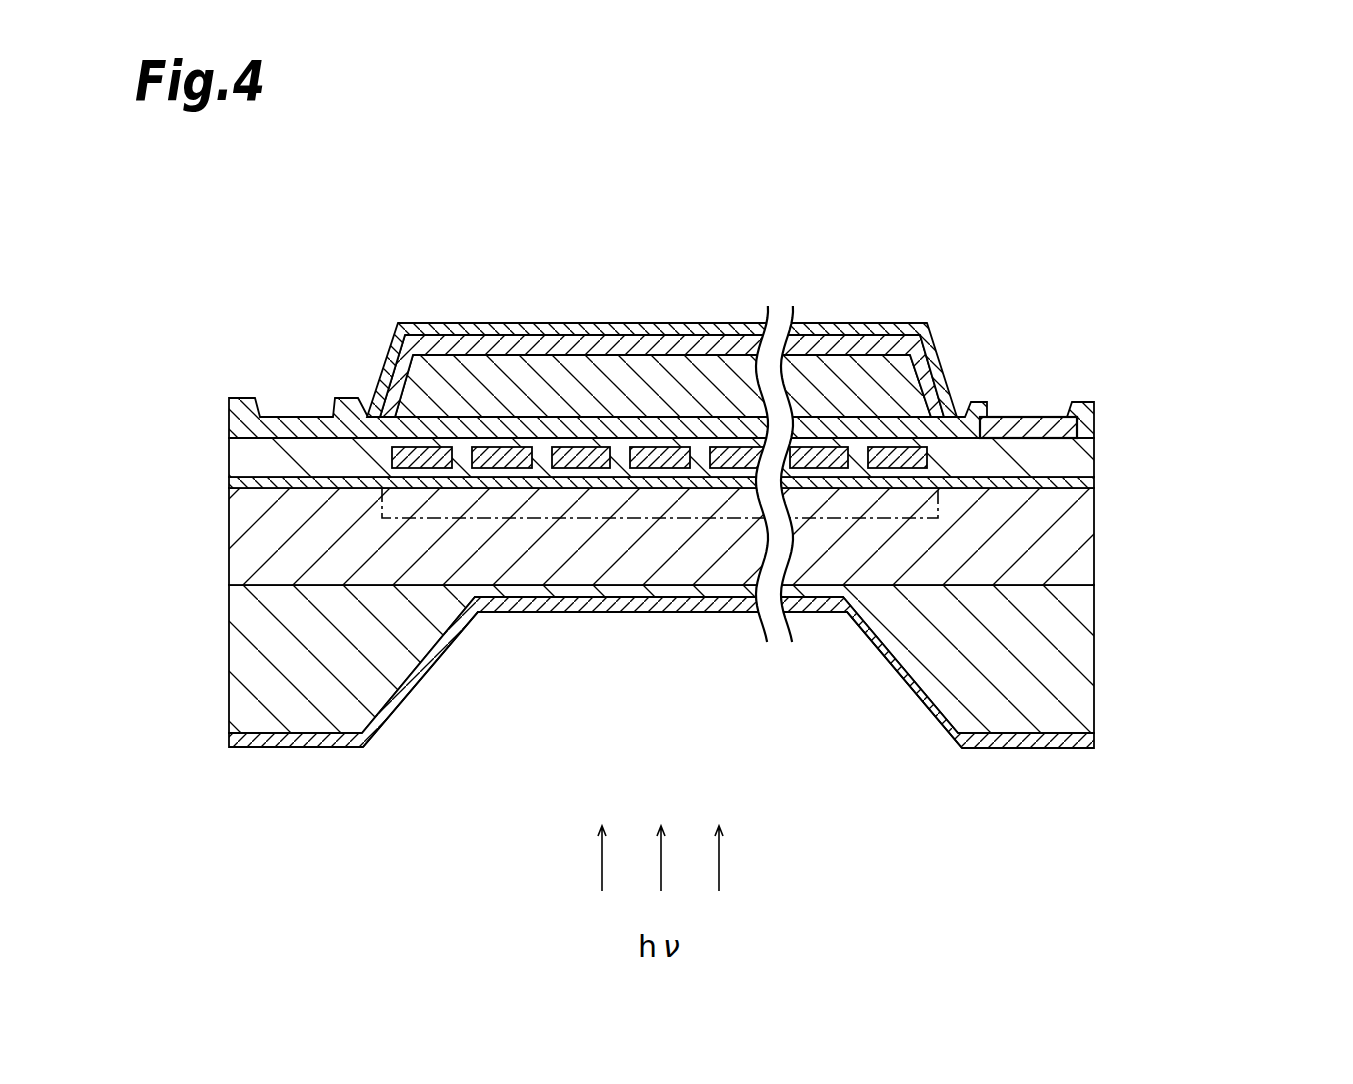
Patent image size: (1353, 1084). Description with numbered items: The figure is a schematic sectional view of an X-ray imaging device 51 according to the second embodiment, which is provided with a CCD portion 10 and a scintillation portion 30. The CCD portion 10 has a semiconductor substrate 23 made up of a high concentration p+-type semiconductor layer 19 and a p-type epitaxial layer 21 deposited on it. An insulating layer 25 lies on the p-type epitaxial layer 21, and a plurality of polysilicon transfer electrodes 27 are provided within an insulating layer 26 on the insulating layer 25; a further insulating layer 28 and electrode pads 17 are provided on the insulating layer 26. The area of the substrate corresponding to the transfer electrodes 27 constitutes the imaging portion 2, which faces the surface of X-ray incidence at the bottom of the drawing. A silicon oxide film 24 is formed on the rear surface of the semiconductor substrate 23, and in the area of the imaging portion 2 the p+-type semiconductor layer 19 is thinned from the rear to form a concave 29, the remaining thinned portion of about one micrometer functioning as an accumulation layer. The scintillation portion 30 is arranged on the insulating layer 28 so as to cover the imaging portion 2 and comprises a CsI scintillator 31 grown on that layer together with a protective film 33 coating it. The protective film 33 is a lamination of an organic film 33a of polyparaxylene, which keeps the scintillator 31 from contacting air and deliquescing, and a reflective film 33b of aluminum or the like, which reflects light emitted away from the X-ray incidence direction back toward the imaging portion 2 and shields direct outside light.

The imaging portion 2 is at (669, 522).
The CCD portion 10 is at (707, 525).
The electrode pads 17 is at (1048, 430).
The p+-type semiconductor layer 19 is at (1068, 640).
The p-type epitaxial layer 21 is at (1067, 537).
The semiconductor substrate 23 is at (757, 610).
The silicon oxide film 24 is at (1037, 748).
The insulating layer 25 is at (1062, 483).
The insulating layer 26 is at (1085, 450).
The transfer electrodes 27 is at (912, 455).
The insulating layer 28 is at (858, 432).
The concave 29 is at (527, 750).
The scintillation portion 30 is at (576, 317).
The scintillator 31 is at (420, 403).
The protective film 33 is at (605, 317).
The organic film 33a is at (428, 323).
The reflective film 33b is at (397, 345).
The X-ray imaging device 51 is at (707, 499).